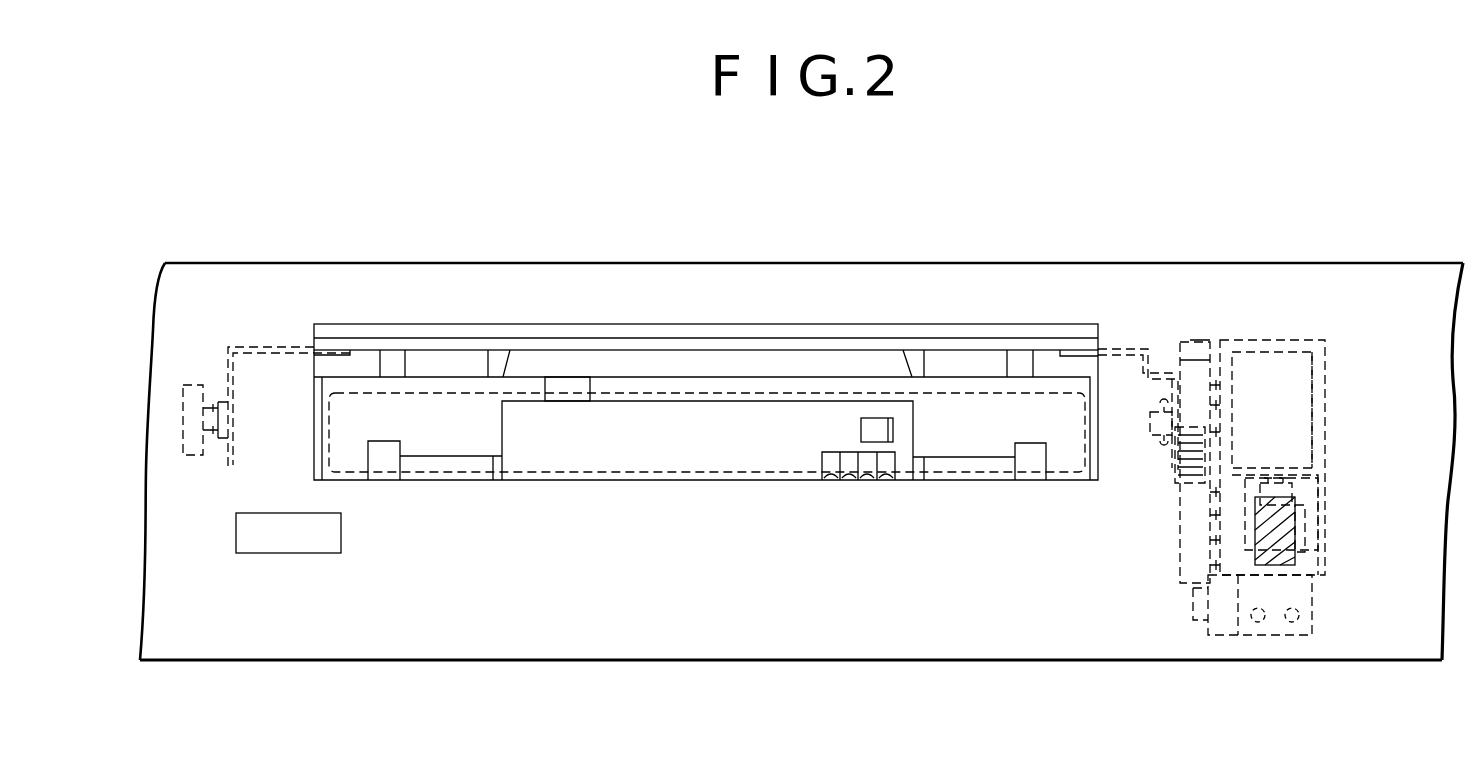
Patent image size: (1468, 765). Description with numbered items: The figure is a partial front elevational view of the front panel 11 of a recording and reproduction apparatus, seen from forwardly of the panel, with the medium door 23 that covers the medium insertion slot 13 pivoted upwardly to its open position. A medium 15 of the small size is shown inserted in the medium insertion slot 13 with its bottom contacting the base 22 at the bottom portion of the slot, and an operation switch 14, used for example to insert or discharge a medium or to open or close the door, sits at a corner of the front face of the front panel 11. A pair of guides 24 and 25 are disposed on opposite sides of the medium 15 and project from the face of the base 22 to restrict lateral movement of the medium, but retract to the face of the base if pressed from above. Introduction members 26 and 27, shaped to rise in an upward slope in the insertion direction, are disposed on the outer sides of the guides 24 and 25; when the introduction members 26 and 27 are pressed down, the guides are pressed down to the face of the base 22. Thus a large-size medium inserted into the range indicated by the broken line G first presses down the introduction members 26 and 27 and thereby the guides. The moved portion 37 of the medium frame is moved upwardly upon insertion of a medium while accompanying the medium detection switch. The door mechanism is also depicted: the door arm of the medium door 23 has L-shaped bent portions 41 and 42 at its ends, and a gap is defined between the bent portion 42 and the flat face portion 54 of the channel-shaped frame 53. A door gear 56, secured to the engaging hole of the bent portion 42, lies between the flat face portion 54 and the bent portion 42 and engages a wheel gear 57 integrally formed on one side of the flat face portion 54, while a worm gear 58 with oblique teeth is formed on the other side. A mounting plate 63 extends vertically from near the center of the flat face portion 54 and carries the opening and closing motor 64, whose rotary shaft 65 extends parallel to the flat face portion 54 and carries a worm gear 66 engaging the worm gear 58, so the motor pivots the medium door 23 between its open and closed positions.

The front panel 11 is at (506, 645).
The medium insertion slot 13 is at (1087, 482).
The operation switch 14 is at (278, 553).
The medium 15 is at (682, 458).
The base 22 is at (850, 478).
The medium door 23 is at (747, 360).
The guide 24 is at (953, 467).
The guide 25 is at (444, 462).
The introduction member 26 is at (1028, 468).
The introduction member 27 is at (382, 468).
The moved portion 37 is at (573, 385).
The bent portion 41 is at (228, 365).
The bent portion 42 is at (1163, 375).
The frame 53 is at (1237, 345).
The flat face portion 54 is at (1210, 345).
The door gear 56 is at (1185, 415).
The wheel gear 57 is at (1183, 533).
The worm gear 58 is at (1305, 520).
The mounting plate 63 is at (1297, 470).
The opening and closing motor 64 is at (1305, 410).
The rotary shaft 65 is at (1288, 478).
The worm gear 66 is at (1273, 570).
The broken line G is at (572, 478).